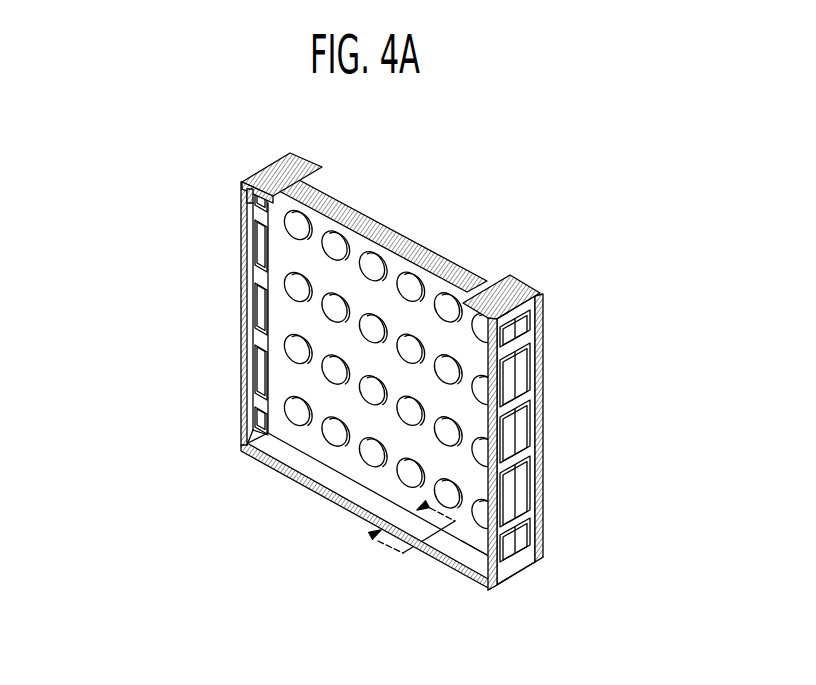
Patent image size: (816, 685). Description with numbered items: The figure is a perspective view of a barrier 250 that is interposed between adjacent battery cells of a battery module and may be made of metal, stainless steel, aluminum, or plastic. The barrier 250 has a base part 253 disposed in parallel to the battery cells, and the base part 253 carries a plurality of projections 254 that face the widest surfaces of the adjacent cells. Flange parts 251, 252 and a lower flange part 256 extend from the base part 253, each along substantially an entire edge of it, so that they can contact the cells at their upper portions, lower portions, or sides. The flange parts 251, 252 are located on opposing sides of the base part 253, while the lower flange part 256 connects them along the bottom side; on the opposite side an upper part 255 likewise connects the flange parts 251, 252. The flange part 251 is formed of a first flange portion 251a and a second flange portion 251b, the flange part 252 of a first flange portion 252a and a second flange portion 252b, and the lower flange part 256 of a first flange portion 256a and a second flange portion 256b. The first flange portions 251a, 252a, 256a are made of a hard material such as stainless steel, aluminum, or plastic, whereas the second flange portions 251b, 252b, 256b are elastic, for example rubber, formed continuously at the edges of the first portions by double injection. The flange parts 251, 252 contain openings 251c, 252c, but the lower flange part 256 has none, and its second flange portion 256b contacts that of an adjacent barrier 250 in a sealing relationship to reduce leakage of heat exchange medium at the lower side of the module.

The barrier 250 is at (523, 203).
The flange part 251 is at (138, 165).
The first flange portion 251a is at (260, 288).
The second flange portion 251b is at (241, 193).
The opening 251c is at (264, 307).
The flange part 252 is at (658, 305).
The first flange portion 252a is at (522, 403).
The second flange portion 252b is at (543, 317).
The opening 252c is at (521, 437).
The base part 253 is at (476, 539).
The projection 254 is at (298, 413).
The upper part 255 is at (393, 228).
The lower flange part 256 is at (232, 512).
The first flange portion 256a is at (373, 508).
The second flange portion 256b is at (331, 495).